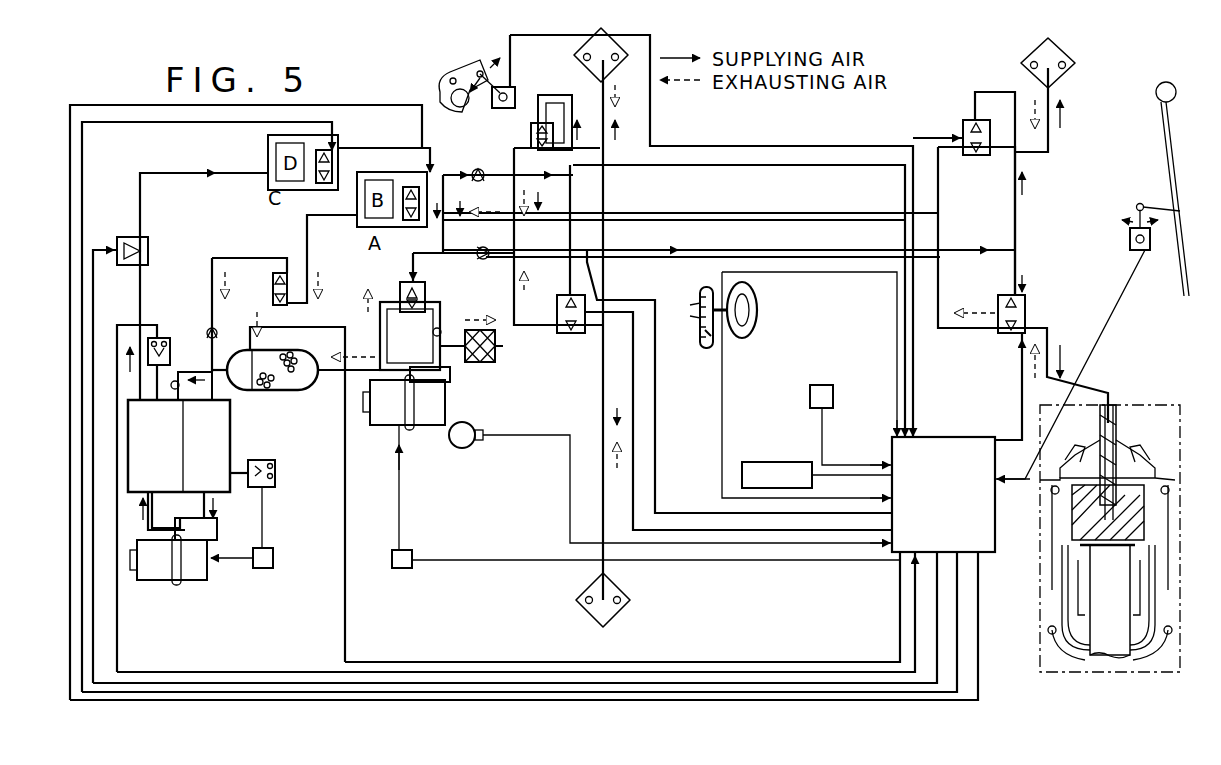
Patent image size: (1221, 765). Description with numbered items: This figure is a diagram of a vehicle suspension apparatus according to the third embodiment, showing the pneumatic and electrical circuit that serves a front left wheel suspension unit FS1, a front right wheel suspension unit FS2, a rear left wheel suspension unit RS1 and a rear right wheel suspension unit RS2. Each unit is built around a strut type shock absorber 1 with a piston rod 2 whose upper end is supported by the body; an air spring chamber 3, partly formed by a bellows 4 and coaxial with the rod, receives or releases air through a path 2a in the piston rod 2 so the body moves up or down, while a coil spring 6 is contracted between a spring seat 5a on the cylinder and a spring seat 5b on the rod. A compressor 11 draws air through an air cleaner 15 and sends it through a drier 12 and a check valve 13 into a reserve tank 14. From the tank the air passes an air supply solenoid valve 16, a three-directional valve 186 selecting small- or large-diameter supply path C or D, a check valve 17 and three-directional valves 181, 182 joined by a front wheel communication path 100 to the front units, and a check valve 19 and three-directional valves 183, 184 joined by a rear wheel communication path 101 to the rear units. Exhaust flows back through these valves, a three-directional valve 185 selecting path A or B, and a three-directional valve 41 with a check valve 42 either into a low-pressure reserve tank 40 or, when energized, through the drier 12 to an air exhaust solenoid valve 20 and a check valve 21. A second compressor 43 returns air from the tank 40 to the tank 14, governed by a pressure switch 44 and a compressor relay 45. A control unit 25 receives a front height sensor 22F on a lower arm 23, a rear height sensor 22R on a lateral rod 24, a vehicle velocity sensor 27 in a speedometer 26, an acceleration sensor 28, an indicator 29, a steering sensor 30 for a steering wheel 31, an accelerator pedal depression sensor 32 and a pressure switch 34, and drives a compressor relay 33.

The strut type shock absorber 1 is at (1103, 650).
The piston rod 2 is at (1072, 530).
The path 2a is at (1116, 420).
The air spring chamber 3 is at (1136, 548).
The bellows 4 is at (1156, 606).
The spring seat 5a is at (1155, 645).
The spring seat 5b is at (1158, 470).
The coil spring 6 is at (1170, 510).
The compressor 11 is at (415, 428).
The drier 12 is at (288, 392).
The check valve 13 is at (205, 378).
The reserve tank 14 is at (133, 510).
The air cleaner 15 is at (478, 364).
The air supply solenoid valve 16 is at (158, 235).
The check valve 17 is at (471, 170).
The check valve 19 is at (483, 260).
The air exhaust solenoid valve 20 is at (412, 315).
The check valve 21 is at (441, 330).
The front height sensor 22F is at (517, 92).
The rear height sensor 22R is at (1128, 240).
The lower arm 23 is at (452, 78).
The lateral rod 24 is at (1179, 145).
The control unit 25 is at (957, 436).
The speedometer 26 is at (699, 292).
The vehicle velocity sensor 27 is at (699, 345).
The acceleration sensor 28 is at (824, 384).
The indicator 29 is at (758, 460).
The steering sensor 30 is at (725, 340).
The steering wheel 31 is at (760, 280).
The accelerator pedal depression sensor 32 is at (470, 446).
The compressor relay 33 is at (406, 548).
The pressure switch 34 is at (172, 324).
The low-pressure reserve tank 40 is at (232, 440).
The three-directional valve 41 is at (272, 290).
The check valve 42 is at (205, 332).
The compressor 43 is at (190, 582).
The pressure switch 44 is at (277, 472).
The compressor relay 45 is at (262, 570).
The front wheel communication path 100 is at (576, 257).
The rear wheel communication path 101 is at (1017, 215).
The three-directional valve 181 is at (566, 336).
The three-directional valve 182 is at (529, 133).
The three-directional valve 183 is at (1028, 313).
The three-directional valve 184 is at (962, 127).
The three-directional valve 185 is at (412, 228).
The three-directional valve 186 is at (340, 150).
The front left wheel suspension unit FS1 is at (630, 598).
The front right wheel suspension unit FS2 is at (573, 52).
The rear left wheel suspension unit RS1 is at (1118, 398).
The rear right wheel suspension unit RS2 is at (1076, 62).